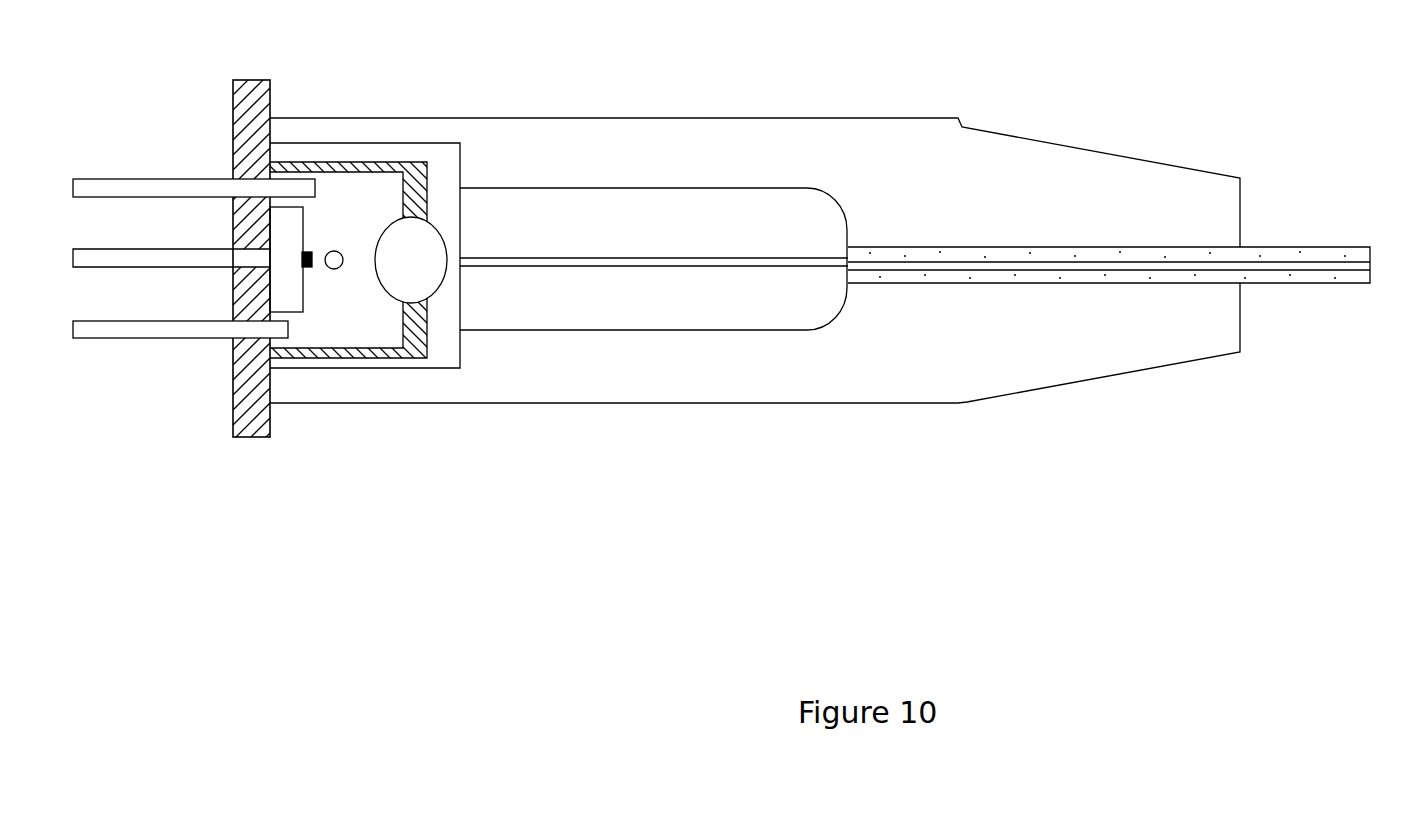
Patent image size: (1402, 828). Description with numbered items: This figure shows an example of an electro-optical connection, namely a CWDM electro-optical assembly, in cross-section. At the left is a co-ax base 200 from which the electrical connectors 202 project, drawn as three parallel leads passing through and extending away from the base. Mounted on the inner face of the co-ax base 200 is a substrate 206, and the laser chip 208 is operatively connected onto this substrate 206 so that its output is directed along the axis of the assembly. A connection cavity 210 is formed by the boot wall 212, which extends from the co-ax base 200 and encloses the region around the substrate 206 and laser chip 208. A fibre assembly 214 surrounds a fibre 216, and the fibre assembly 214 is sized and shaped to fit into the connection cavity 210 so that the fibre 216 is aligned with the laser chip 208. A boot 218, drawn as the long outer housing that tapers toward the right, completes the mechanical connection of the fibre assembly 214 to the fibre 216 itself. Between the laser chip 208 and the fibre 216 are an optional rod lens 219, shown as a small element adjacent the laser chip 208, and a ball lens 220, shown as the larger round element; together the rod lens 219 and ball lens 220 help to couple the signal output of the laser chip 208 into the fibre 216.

The co-ax base 200 is at (253, 80).
The electrical connectors 202 is at (203, 321).
The substrate 206 is at (295, 228).
The laser chip 208 is at (310, 268).
The connection cavity 210 is at (412, 145).
The boot wall 212 is at (352, 126).
The fibre assembly 214 is at (868, 247).
The fibre 216 is at (613, 262).
The boot 218 is at (723, 132).
The rod lens 219 is at (343, 263).
The ball lens 220 is at (430, 298).